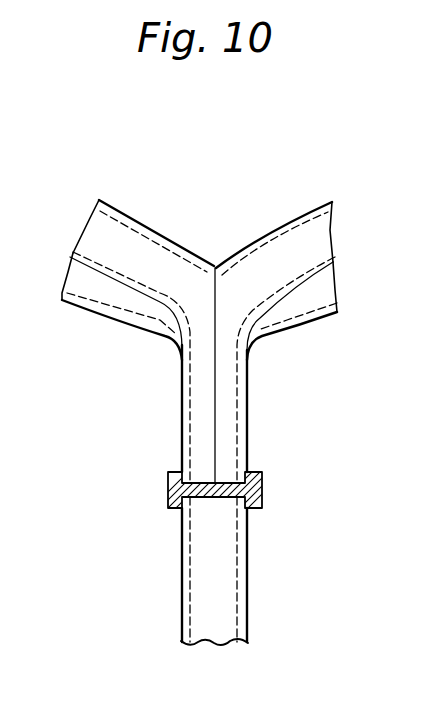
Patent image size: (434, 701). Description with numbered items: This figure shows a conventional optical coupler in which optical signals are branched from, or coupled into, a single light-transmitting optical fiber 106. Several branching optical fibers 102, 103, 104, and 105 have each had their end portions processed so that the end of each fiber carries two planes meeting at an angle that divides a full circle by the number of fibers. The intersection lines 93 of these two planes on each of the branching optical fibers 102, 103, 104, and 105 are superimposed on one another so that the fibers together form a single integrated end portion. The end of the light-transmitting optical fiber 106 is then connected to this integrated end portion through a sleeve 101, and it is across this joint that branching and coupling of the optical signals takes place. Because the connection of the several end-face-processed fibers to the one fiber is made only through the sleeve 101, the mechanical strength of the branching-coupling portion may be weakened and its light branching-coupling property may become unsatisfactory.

The intersection line 93 is at (215, 412).
The sleeve 101 is at (262, 493).
The branching optical fiber 102 is at (283, 243).
The branching optical fiber 103 is at (312, 295).
The branching optical fiber 104 is at (137, 243).
The branching optical fiber 105 is at (107, 293).
The light-transmitting optical fiber 106 is at (223, 590).